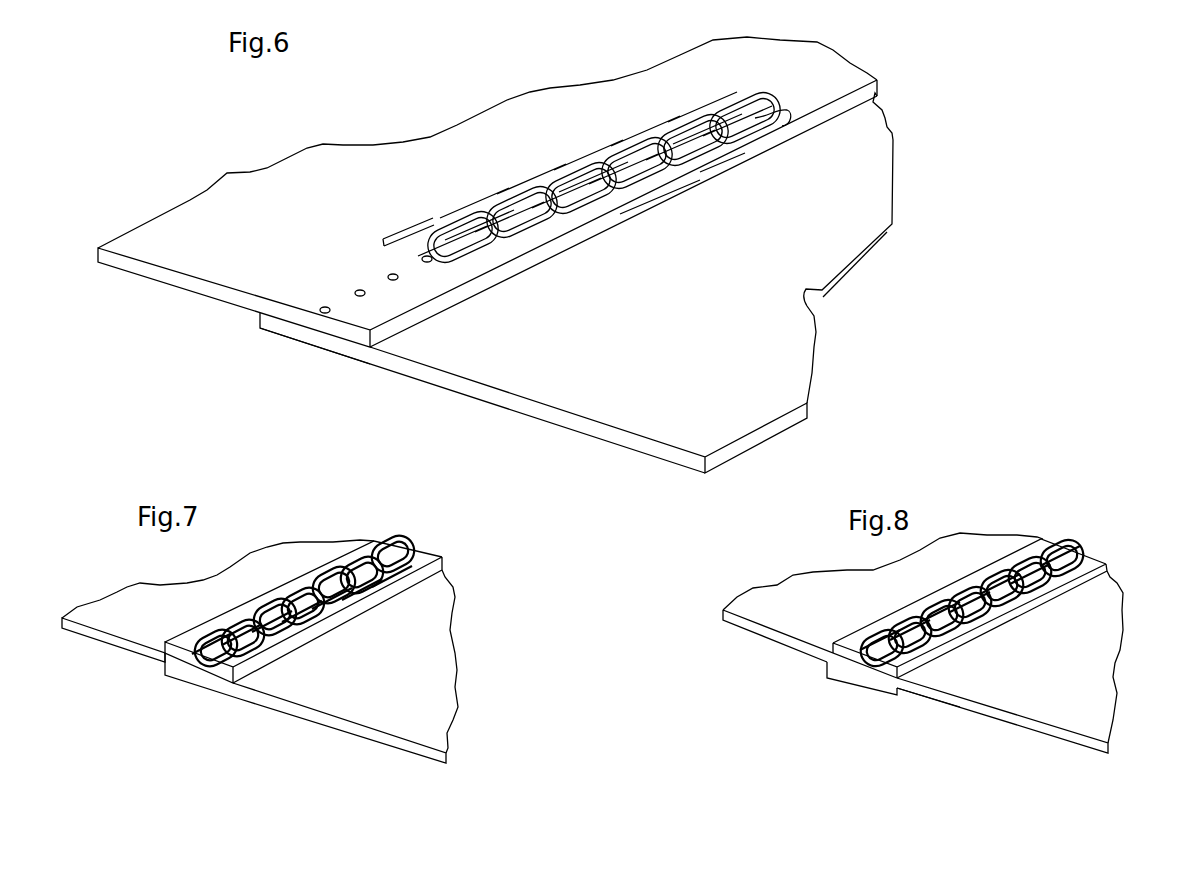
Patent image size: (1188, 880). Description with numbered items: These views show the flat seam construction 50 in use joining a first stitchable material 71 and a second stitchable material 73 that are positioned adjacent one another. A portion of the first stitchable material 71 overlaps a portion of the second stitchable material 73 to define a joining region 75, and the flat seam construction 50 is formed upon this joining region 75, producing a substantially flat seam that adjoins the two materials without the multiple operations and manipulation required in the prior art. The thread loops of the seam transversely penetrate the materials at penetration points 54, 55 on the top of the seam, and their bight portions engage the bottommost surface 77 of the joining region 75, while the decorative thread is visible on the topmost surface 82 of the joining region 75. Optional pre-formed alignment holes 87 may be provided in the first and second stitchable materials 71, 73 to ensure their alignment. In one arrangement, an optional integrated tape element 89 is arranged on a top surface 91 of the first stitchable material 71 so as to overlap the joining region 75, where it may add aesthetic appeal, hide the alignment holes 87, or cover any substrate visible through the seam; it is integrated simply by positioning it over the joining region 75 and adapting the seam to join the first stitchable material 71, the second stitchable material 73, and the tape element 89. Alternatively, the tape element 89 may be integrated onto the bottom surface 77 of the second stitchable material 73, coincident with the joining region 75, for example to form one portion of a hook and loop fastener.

In FIG. 6, the flat seam construction 50 is at (613, 217).
In FIG. 7, the flat seam construction 50 is at (373, 541).
In FIG. 8, the flat seam construction 50 is at (1057, 550).
In FIG. 6, the penetration point 54 is at (645, 122).
In FIG. 6, the penetration point 55 is at (635, 208).
In FIG. 6, the first stitchable material 71 is at (323, 176).
In FIG. 7, the first stitchable material 71 is at (106, 627).
In FIG. 8, the first stitchable material 71 is at (838, 594).
In FIG. 6, the second stitchable material 73 is at (870, 185).
In FIG. 7, the second stitchable material 73 is at (322, 712).
In FIG. 8, the second stitchable material 73 is at (1076, 707).
In FIG. 6, the joining region 75 is at (363, 383).
In FIG. 7, the joining region 75 is at (233, 707).
In FIG. 8, the joining region 75 is at (897, 703).
In FIG. 6, the bottommost surface 77 is at (523, 420).
In FIG. 8, the bottommost surface 77 is at (953, 708).
In FIG. 6, the topmost surface 82 is at (790, 88).
In FIG. 6, the alignment holes 87 is at (325, 308).
In FIG. 7, the tape element 89 is at (200, 662).
In FIG. 8, the tape element 89 is at (855, 657).
In FIG. 7, the top surface 91 is at (166, 618).